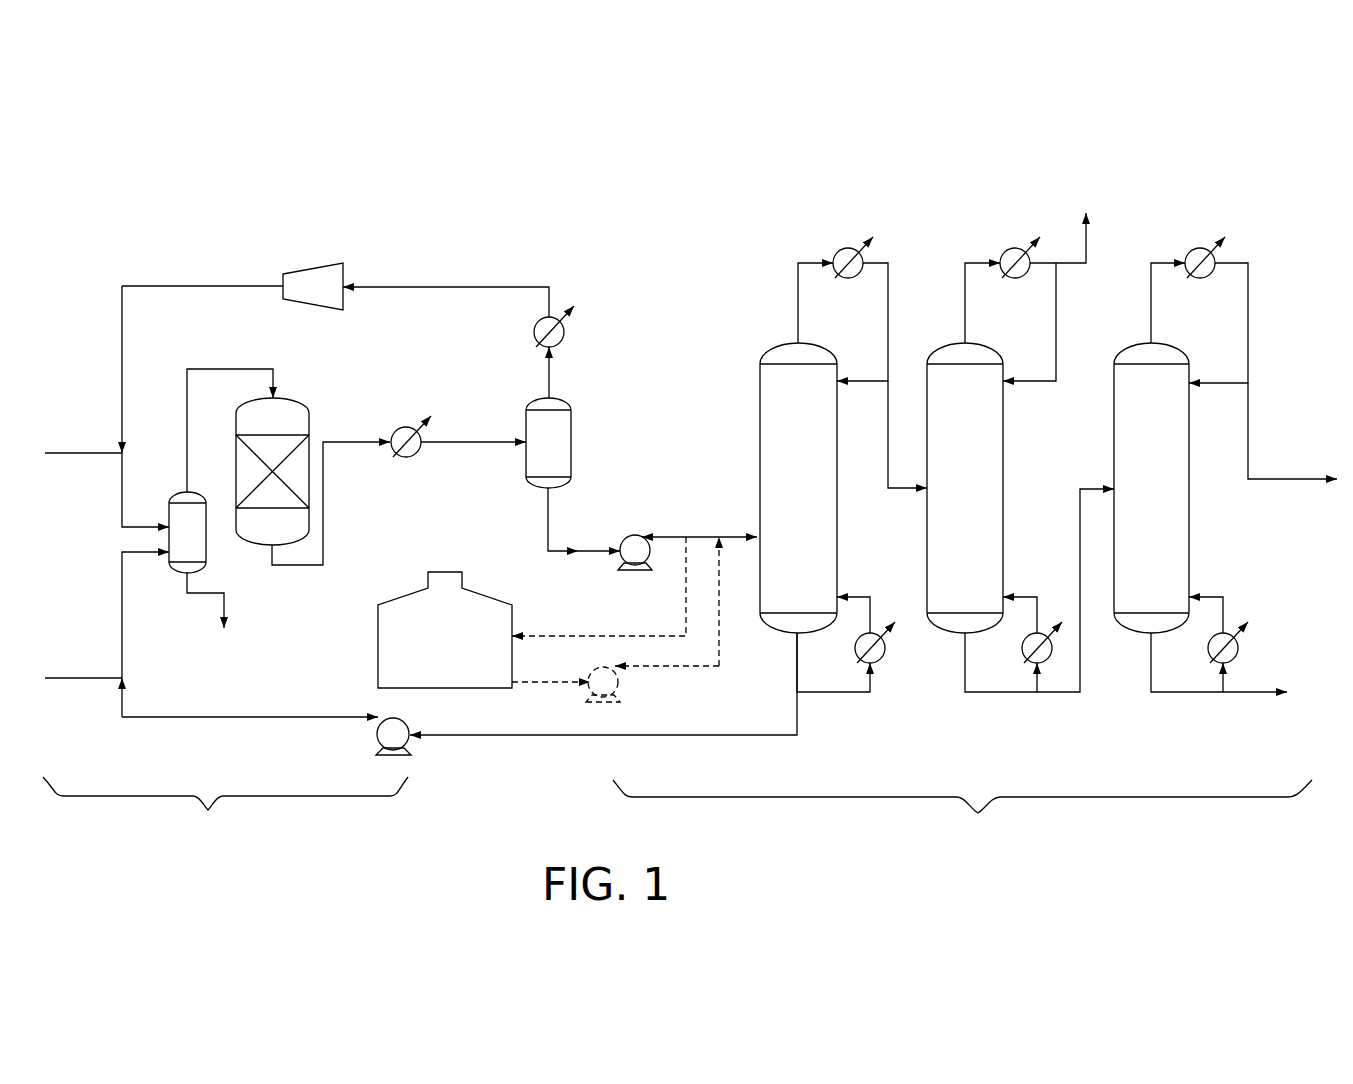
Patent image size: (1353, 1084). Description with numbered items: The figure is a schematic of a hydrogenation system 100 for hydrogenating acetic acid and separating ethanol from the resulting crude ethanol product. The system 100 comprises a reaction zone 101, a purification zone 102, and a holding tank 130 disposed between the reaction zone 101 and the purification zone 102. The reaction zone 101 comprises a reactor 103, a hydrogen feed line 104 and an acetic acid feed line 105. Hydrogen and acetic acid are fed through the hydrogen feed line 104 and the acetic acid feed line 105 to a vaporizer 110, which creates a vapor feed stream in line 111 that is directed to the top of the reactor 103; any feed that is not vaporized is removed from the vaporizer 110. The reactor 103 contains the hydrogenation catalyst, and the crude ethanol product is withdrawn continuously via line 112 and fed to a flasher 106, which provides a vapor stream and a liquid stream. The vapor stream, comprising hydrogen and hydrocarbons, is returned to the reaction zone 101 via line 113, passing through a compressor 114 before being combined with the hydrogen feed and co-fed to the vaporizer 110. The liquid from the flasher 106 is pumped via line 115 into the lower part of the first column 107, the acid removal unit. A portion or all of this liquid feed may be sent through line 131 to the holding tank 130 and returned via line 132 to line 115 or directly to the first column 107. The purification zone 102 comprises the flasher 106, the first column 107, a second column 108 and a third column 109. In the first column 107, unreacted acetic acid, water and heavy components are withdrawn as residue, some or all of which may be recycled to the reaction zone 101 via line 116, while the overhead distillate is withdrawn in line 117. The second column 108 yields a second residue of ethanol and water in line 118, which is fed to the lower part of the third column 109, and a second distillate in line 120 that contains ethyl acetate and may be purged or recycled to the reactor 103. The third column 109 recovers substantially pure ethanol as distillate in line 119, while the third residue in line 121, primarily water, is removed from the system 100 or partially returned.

The hydrogenation system 100 is at (723, 190).
The reaction zone 101 is at (225, 810).
The purification zone 102 is at (962, 812).
The reactor 103 is at (288, 422).
The hydrogen feed line 104 is at (77, 457).
The acetic acid feed line 105 is at (75, 683).
The flasher 106 is at (548, 428).
The first column 107 is at (807, 560).
The second column 108 is at (968, 508).
The third column 109 is at (1173, 533).
The vaporizer 110 is at (183, 551).
The vapor feed stream line 111 is at (202, 368).
The crude ethanol product line 112 is at (290, 566).
The vapor return line 113 is at (437, 287).
The compressor 114 is at (316, 276).
The feed composition line 115 is at (705, 535).
The residue recycle line 116 is at (511, 737).
The overhead distillate line 117 is at (888, 307).
The second residue line 118 is at (1053, 694).
The third distillate line 119 is at (1248, 398).
The second distillate line 120 is at (1088, 243).
The third residue line 121 is at (1238, 694).
The holding tank 130 is at (418, 625).
The holding tank feed line 131 is at (686, 607).
The holding tank return line 132 is at (688, 667).